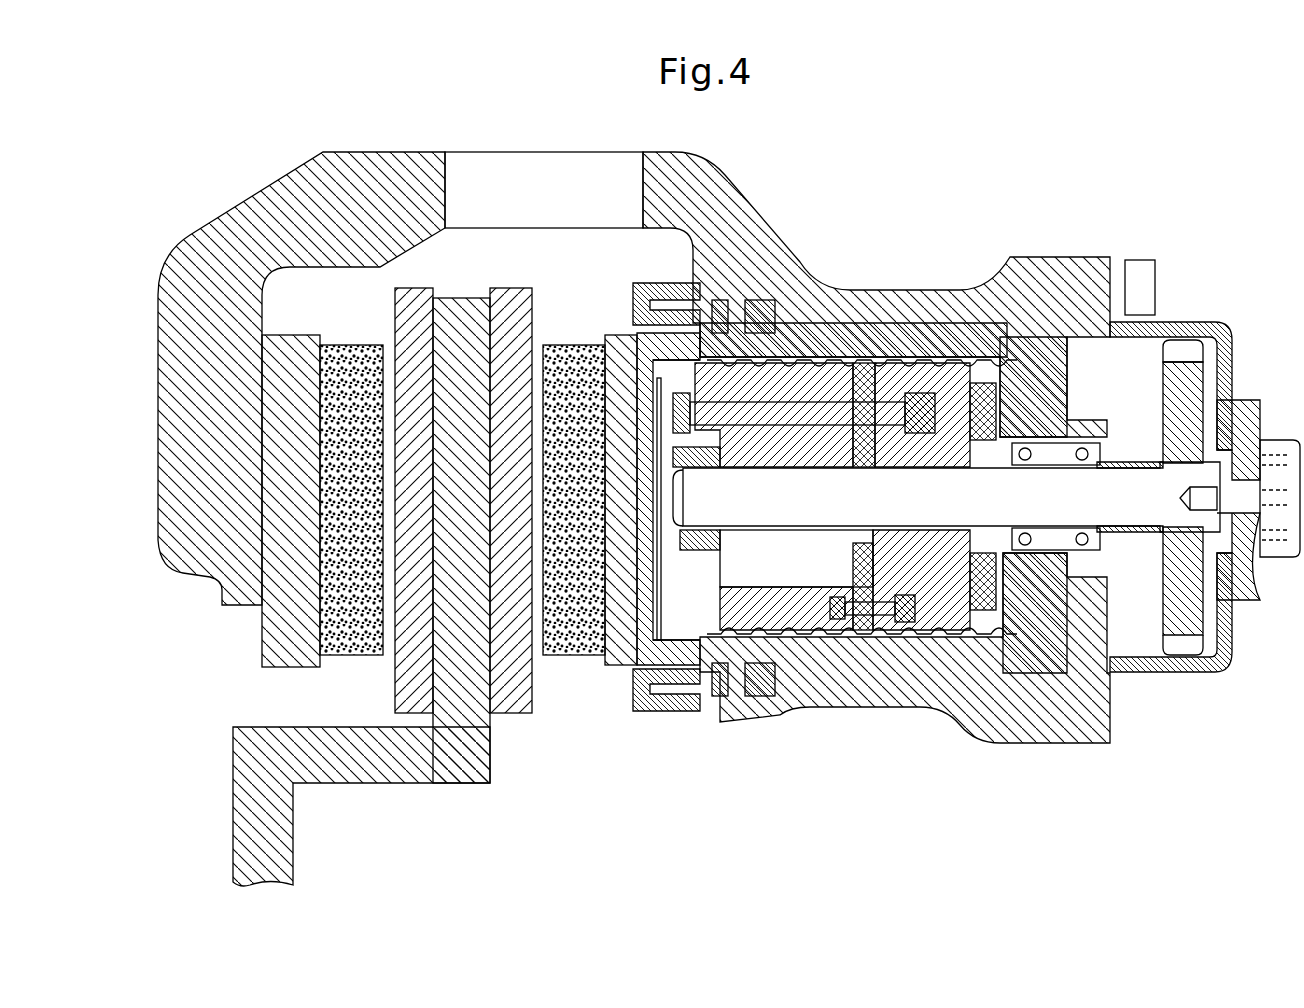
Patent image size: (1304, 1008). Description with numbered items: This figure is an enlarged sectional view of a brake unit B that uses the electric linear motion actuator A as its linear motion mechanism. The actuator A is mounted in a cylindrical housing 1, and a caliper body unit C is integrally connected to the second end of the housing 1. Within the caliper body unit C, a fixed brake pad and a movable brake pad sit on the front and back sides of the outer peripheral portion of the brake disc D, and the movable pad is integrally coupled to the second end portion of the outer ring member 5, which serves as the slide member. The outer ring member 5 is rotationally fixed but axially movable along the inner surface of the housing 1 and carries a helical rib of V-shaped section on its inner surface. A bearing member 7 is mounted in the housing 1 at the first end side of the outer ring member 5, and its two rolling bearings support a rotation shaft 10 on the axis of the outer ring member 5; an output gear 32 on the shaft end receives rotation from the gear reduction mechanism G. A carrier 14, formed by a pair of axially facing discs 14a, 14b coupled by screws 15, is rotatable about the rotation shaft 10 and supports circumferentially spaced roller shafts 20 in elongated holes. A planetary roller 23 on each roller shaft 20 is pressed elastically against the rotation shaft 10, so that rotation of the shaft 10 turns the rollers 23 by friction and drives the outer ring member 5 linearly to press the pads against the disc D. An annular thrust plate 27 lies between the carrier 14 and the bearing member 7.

The housing 1 is at (845, 305).
The outer ring member 5 is at (866, 330).
The bearing member 7 is at (1043, 347).
The rotation shaft 10 is at (877, 510).
The carrier 14 is at (773, 605).
The disc 14a is at (730, 570).
The disc 14b is at (905, 575).
The screws 15 is at (852, 625).
The roller shafts 20 is at (888, 415).
The planetary roller 23 is at (790, 375).
The thrust plate 27 is at (953, 380).
The output gear 32 is at (1195, 615).
The electric linear motion actuator A is at (1053, 312).
The brake unit B is at (470, 270).
The caliper body unit C is at (232, 238).
The brake disc D is at (425, 755).
The gear reduction mechanism G is at (1212, 345).